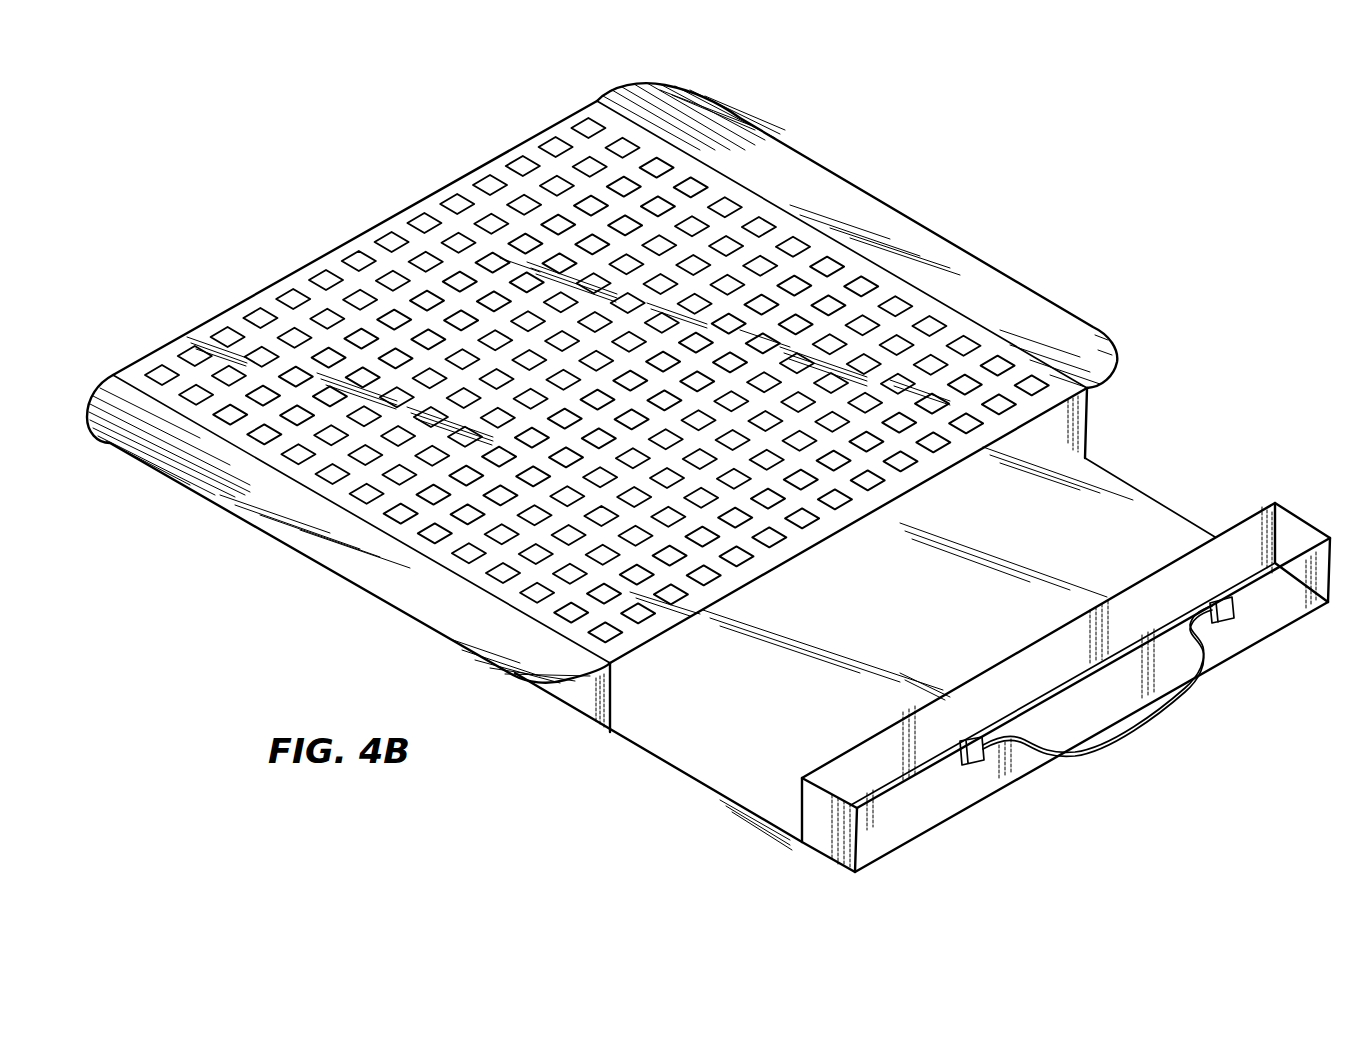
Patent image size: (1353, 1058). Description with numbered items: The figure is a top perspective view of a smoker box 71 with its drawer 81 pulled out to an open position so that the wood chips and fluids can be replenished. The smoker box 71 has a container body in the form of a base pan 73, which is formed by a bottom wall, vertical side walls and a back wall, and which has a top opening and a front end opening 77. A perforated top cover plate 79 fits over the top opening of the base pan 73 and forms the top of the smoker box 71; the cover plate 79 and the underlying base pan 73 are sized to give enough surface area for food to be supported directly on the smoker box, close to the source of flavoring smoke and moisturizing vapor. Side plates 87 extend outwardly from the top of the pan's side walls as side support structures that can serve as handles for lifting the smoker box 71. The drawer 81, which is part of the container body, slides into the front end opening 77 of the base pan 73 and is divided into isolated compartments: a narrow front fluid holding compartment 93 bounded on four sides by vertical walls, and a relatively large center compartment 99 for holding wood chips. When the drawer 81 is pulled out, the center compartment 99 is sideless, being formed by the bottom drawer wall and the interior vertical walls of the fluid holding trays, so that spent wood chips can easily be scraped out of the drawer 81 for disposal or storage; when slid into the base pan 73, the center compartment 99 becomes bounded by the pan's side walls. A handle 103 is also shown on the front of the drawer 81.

The smoker box 71 is at (938, 165).
The base pan 73 is at (572, 695).
The front end opening 77 is at (1042, 443).
The perforated top cover plate 79 is at (550, 130).
The drawer 81 is at (748, 782).
The side plates 87 is at (743, 148).
The front fluid holding compartment 93 is at (1260, 533).
The center compartment 99 is at (1110, 503).
The handle 103 is at (1117, 733).